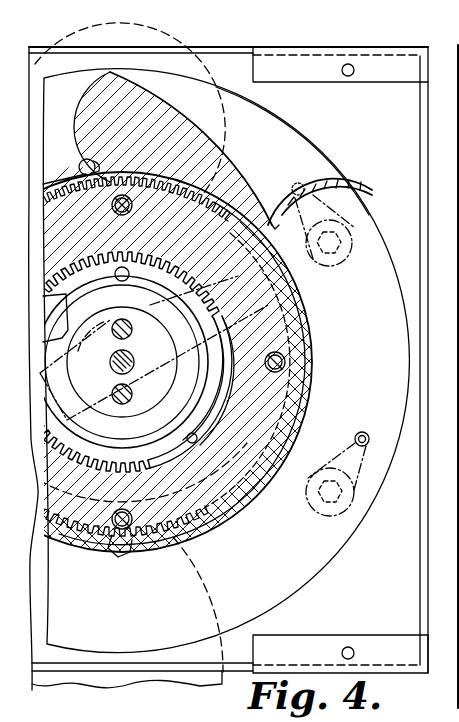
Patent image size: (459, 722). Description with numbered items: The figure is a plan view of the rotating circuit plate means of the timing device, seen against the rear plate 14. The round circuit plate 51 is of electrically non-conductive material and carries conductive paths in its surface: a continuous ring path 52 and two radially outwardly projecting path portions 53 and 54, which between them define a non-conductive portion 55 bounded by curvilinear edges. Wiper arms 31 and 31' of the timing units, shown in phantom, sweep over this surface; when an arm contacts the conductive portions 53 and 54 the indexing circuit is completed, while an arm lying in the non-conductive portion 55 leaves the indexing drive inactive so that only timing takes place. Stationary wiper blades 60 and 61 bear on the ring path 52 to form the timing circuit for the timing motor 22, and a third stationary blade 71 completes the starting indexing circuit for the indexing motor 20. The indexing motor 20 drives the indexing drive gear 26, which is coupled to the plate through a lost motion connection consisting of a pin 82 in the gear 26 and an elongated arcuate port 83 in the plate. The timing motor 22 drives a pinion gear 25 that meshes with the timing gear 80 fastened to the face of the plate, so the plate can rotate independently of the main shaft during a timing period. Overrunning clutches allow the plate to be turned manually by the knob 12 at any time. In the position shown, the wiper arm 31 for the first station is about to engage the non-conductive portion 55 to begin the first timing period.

The rear plate 14 is at (232, 47).
The indexing motor 20 is at (94, 34).
The timing motor 22 is at (211, 685).
The circuit plate 51 is at (385, 274).
The non-conductive portion 55 is at (284, 145).
The projecting path portion 53 is at (150, 104).
The continuous ring path 52 is at (243, 507).
The timing gear 80 is at (200, 537).
The indexing drive gear 26 is at (108, 462).
The stationary wiper blade 60 is at (173, 290).
The third stationary blade 71 is at (82, 168).
The pin 82 is at (127, 281).
The pinion gear 25 is at (128, 560).
The elongated arcuate port 83 is at (65, 308).
The stationary wiper blade 61 is at (210, 373).
The knob 12 is at (78, 412).
The projecting path portion 54 is at (343, 188).
The wiper arm 31 is at (325, 258).
The wiper arm 31' is at (337, 483).